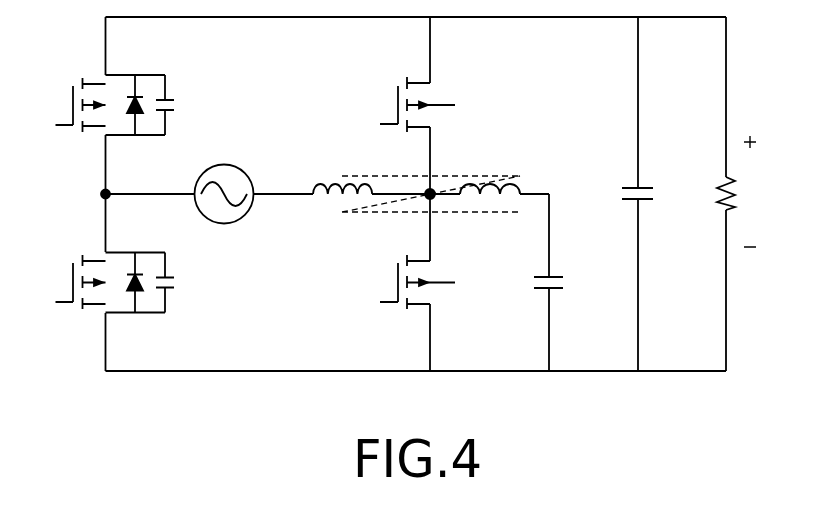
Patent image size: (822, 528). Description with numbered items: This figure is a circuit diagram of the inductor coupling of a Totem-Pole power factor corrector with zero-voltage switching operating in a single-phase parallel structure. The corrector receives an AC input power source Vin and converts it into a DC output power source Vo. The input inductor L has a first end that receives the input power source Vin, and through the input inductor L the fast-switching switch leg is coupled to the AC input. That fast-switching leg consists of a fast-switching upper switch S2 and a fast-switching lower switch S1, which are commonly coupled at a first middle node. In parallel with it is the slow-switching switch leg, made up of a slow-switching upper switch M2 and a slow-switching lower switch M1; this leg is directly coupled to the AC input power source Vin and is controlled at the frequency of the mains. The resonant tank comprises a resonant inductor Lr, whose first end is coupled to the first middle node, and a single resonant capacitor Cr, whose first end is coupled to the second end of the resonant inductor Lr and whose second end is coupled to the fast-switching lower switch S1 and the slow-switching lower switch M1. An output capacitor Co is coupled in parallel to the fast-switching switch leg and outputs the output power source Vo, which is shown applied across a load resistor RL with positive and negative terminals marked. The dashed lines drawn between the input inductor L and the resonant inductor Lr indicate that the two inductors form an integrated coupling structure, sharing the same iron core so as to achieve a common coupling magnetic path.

The slow-switching upper switch M2 is at (102, 105).
The slow-switching lower switch M1 is at (102, 283).
The fast-switching upper switch S2 is at (407, 104).
The fast-switching lower switch S1 is at (407, 282).
The input power source Vin is at (224, 176).
The input inductor L is at (342, 168).
The resonant inductor Lr is at (431, 177).
The resonant capacitor Cr is at (533, 282).
The output capacitor Co is at (619, 194).
The load resistor RL is at (707, 194).
The output power source Vo is at (760, 191).